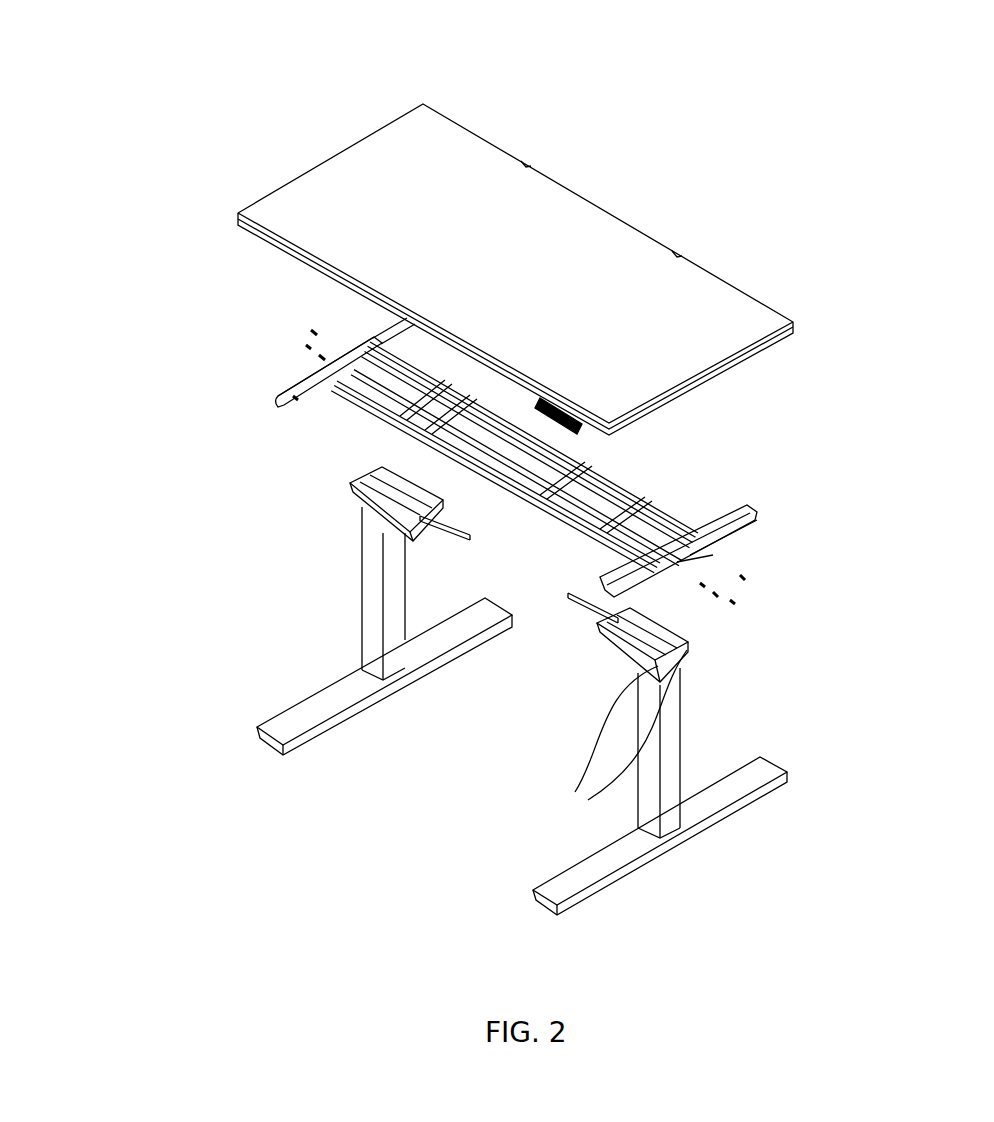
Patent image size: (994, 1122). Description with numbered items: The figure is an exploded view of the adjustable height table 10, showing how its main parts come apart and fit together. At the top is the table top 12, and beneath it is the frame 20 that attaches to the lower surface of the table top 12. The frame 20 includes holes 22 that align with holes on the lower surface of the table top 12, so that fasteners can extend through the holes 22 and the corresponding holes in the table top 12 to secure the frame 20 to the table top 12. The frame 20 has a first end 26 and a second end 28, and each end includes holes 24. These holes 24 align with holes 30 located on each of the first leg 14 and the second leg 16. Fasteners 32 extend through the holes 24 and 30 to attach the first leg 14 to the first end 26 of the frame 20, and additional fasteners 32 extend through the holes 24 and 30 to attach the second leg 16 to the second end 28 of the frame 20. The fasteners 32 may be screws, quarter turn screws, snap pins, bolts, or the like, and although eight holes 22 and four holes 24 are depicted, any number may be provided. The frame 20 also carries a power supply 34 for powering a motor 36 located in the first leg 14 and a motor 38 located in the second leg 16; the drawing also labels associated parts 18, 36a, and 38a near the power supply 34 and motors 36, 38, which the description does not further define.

The table 10 is at (772, 123).
The table top 12 is at (266, 193).
The first leg 14 is at (687, 723).
The second leg 16 is at (357, 593).
The controller 18 is at (560, 414).
The frame 20 is at (282, 394).
The holes 22 is at (736, 512).
The holes 24 is at (713, 555).
The first end 26 is at (772, 556).
The second end 28 is at (266, 403).
The holes 30 is at (618, 734).
The fasteners 32 is at (299, 347).
The power supply 34 is at (527, 460).
The motor 36 is at (640, 643).
The right bracket pin 36a is at (588, 607).
The motor 38 is at (380, 490).
The left bracket pin 38a is at (453, 528).